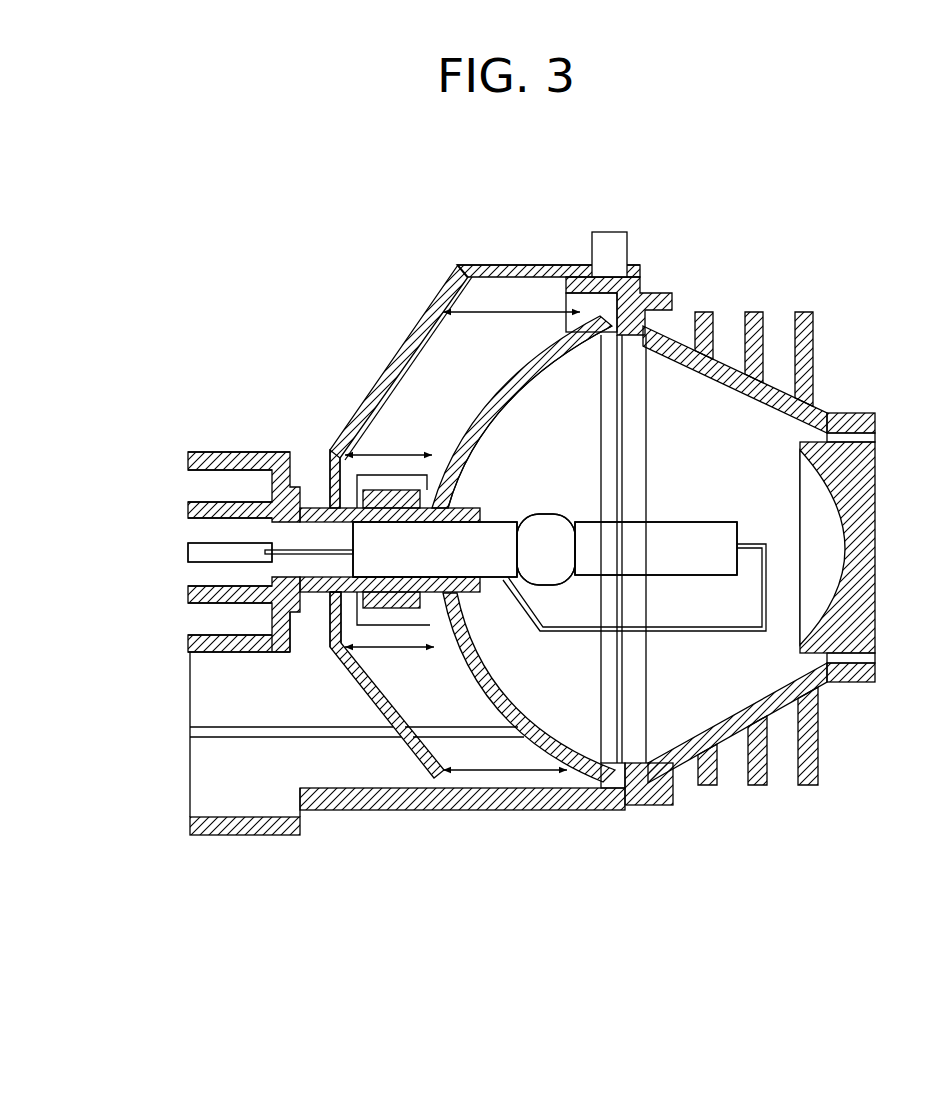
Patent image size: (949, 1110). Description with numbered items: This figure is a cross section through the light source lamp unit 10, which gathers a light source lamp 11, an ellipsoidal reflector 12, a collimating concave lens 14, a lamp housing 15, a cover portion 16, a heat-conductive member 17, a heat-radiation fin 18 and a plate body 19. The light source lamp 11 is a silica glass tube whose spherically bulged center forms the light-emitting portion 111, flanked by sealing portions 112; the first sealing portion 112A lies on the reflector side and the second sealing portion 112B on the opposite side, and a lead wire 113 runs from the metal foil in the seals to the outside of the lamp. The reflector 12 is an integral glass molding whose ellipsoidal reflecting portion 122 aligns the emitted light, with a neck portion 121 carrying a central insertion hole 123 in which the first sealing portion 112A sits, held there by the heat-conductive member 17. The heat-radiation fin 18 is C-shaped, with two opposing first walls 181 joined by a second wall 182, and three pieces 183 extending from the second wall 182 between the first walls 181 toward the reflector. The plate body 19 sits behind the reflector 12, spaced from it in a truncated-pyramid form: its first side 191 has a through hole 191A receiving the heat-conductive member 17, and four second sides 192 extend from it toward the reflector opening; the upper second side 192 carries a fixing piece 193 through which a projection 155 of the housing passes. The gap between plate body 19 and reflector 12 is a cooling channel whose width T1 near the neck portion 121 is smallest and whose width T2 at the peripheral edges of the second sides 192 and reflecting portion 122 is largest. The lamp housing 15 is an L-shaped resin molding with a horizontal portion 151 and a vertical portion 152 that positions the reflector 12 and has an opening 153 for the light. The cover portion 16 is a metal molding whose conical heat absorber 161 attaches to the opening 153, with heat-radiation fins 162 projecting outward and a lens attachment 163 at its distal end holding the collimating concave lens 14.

The light source lamp unit 10 is at (896, 226).
The light source lamp 11 is at (506, 520).
The light-emitting portion 111 is at (548, 512).
The sealing portions 112 is at (672, 530).
The first sealing portion 112A is at (435, 549).
The second sealing portion 112B is at (656, 548).
The lead wire 113 is at (330, 562).
The ellipsoidal reflector 12 is at (527, 356).
The neck portion 121 is at (404, 468).
The reflecting portion 122 is at (497, 390).
The insertion hole 123 is at (380, 495).
The collimating concave lens 14 is at (870, 525).
The lamp housing 15 is at (452, 800).
The horizontal portion 151 is at (388, 800).
The vertical portion 152 is at (628, 287).
The opening 153 is at (630, 790).
The projection 155 is at (612, 240).
The cover portion 16 is at (820, 410).
The heat absorber 161 is at (815, 678).
The heat-radiation fins 162 is at (803, 312).
The lens attachment 163 is at (880, 672).
The heat-conductive member 17 is at (468, 500).
The heat-radiation fin 18 is at (222, 455).
The first walls 181 is at (188, 462).
The second wall 182 is at (290, 650).
The pieces 183 is at (188, 595).
The plate body 19 is at (510, 268).
The first side 191 is at (330, 468).
The through hole 191A is at (330, 630).
The second sides 192 is at (375, 400).
The fixing piece 193 is at (555, 268).
The dimension between first side and neck portion T1 is at (345, 440).
The dimension between peripheral edges of second sides and reflecting portion T2 is at (477, 310).